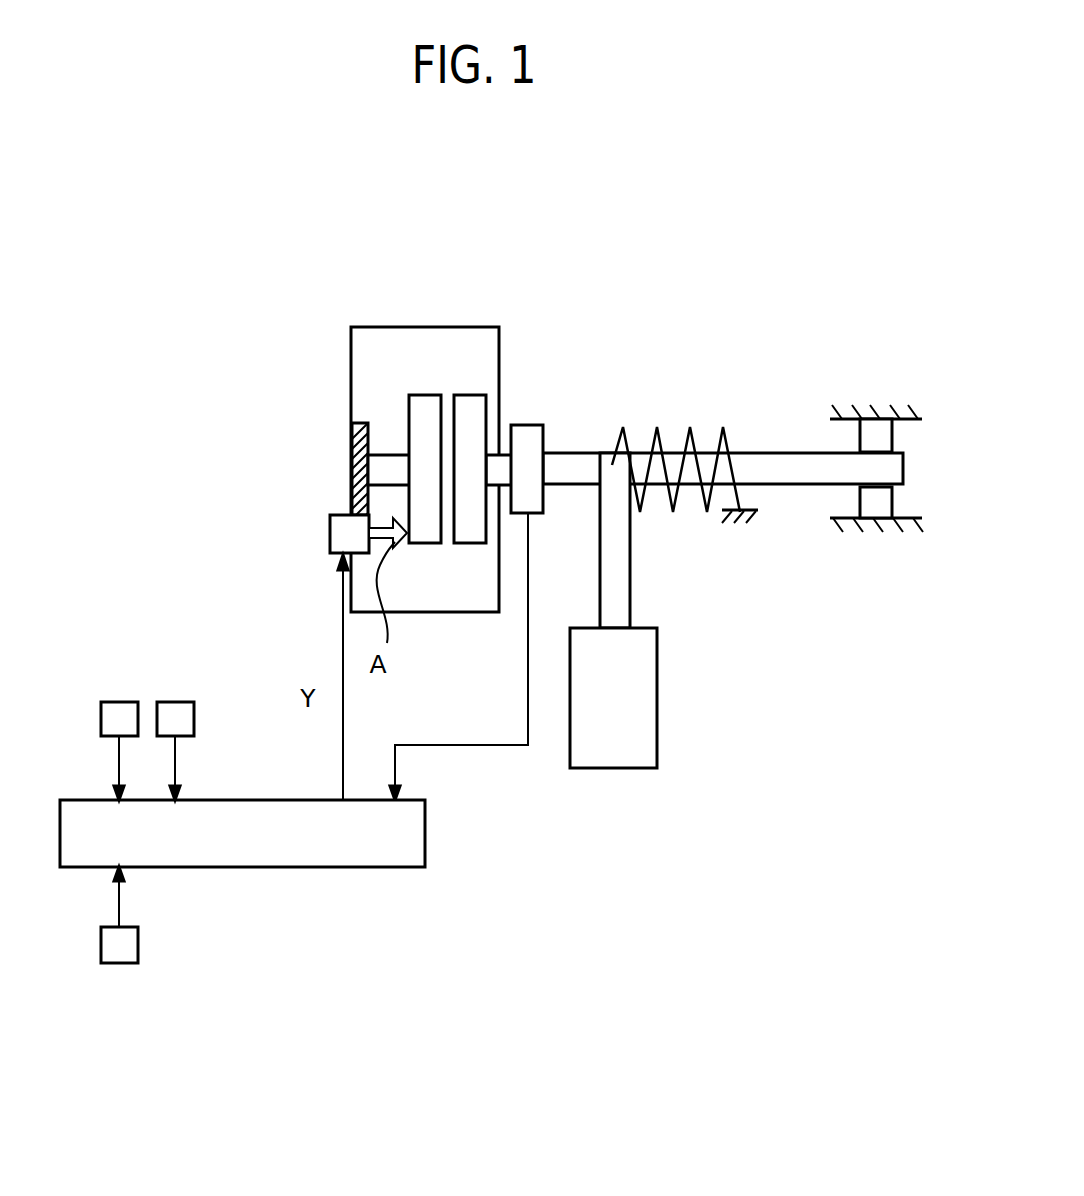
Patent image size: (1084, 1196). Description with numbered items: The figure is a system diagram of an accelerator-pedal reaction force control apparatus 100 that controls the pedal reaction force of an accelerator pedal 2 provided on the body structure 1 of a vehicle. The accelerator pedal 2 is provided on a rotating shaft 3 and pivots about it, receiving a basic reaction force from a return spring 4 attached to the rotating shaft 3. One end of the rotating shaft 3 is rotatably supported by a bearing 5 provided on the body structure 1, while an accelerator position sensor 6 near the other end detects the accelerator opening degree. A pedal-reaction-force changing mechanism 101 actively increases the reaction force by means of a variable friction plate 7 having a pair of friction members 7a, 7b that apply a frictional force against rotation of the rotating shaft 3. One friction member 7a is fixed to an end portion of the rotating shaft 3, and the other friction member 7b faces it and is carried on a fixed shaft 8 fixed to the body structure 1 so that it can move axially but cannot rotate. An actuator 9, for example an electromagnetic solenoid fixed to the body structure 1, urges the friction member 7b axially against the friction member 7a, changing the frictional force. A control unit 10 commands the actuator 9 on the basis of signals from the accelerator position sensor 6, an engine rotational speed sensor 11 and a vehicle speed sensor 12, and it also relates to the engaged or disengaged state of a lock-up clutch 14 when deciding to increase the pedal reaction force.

The accelerator-pedal reaction force control apparatus 100 is at (676, 253).
The pedal-reaction-force changing mechanism 101 is at (330, 432).
The body structure 1 is at (355, 458).
The accelerator pedal 2 is at (646, 608).
The rotating shaft 3 is at (775, 462).
The return spring 4 is at (663, 427).
The bearing 5 is at (882, 503).
The accelerator position sensor 6 is at (528, 433).
The variable friction plate 7 is at (459, 616).
The friction member 7a is at (477, 403).
The friction member 7b is at (428, 403).
The fixed shaft 8 is at (388, 460).
The actuator 9 is at (340, 535).
The control unit 10 is at (425, 835).
The engine rotational speed sensor 11 is at (118, 700).
The vehicle speed sensor 12 is at (174, 700).
The lock-up clutch 14 is at (117, 955).